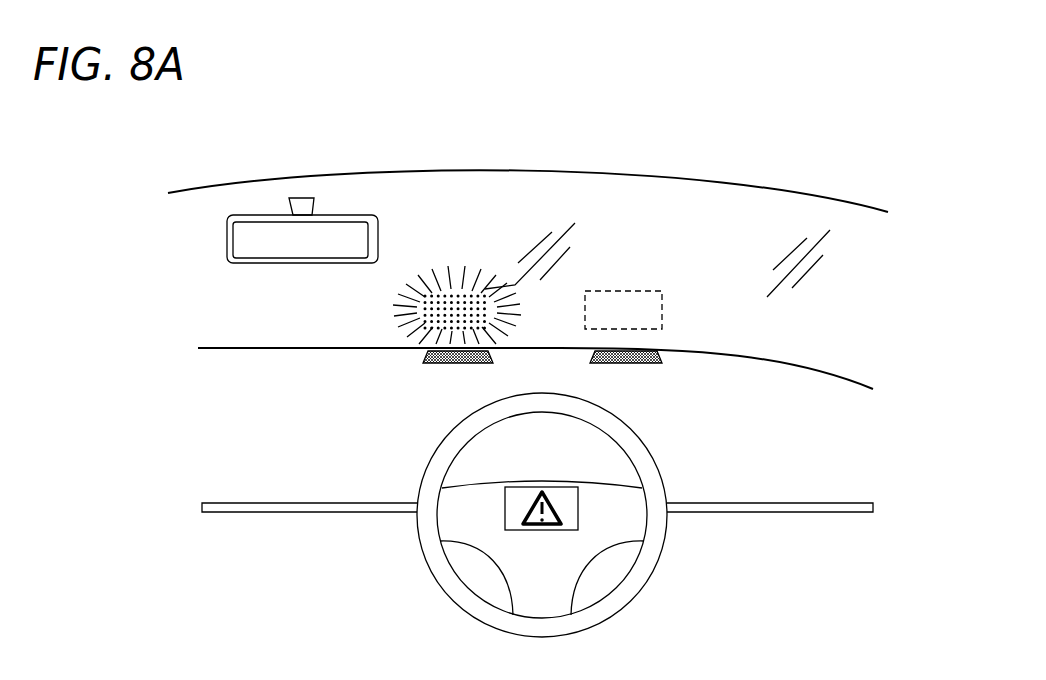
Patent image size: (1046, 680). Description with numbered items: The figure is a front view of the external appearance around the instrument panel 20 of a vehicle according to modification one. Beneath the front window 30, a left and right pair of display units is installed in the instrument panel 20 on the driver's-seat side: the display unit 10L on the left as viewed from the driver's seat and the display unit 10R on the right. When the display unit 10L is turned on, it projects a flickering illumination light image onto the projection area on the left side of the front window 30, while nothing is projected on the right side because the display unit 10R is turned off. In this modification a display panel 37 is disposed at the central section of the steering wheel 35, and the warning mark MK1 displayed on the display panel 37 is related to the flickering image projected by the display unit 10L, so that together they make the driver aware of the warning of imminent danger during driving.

The front window 30 is at (760, 200).
The instrument panel 20 is at (278, 358).
The display unit 10L is at (423, 362).
The display unit 10R is at (663, 362).
The steering wheel 35 is at (645, 557).
The display panel 37 is at (505, 513).
The warning mark MK1 is at (537, 530).